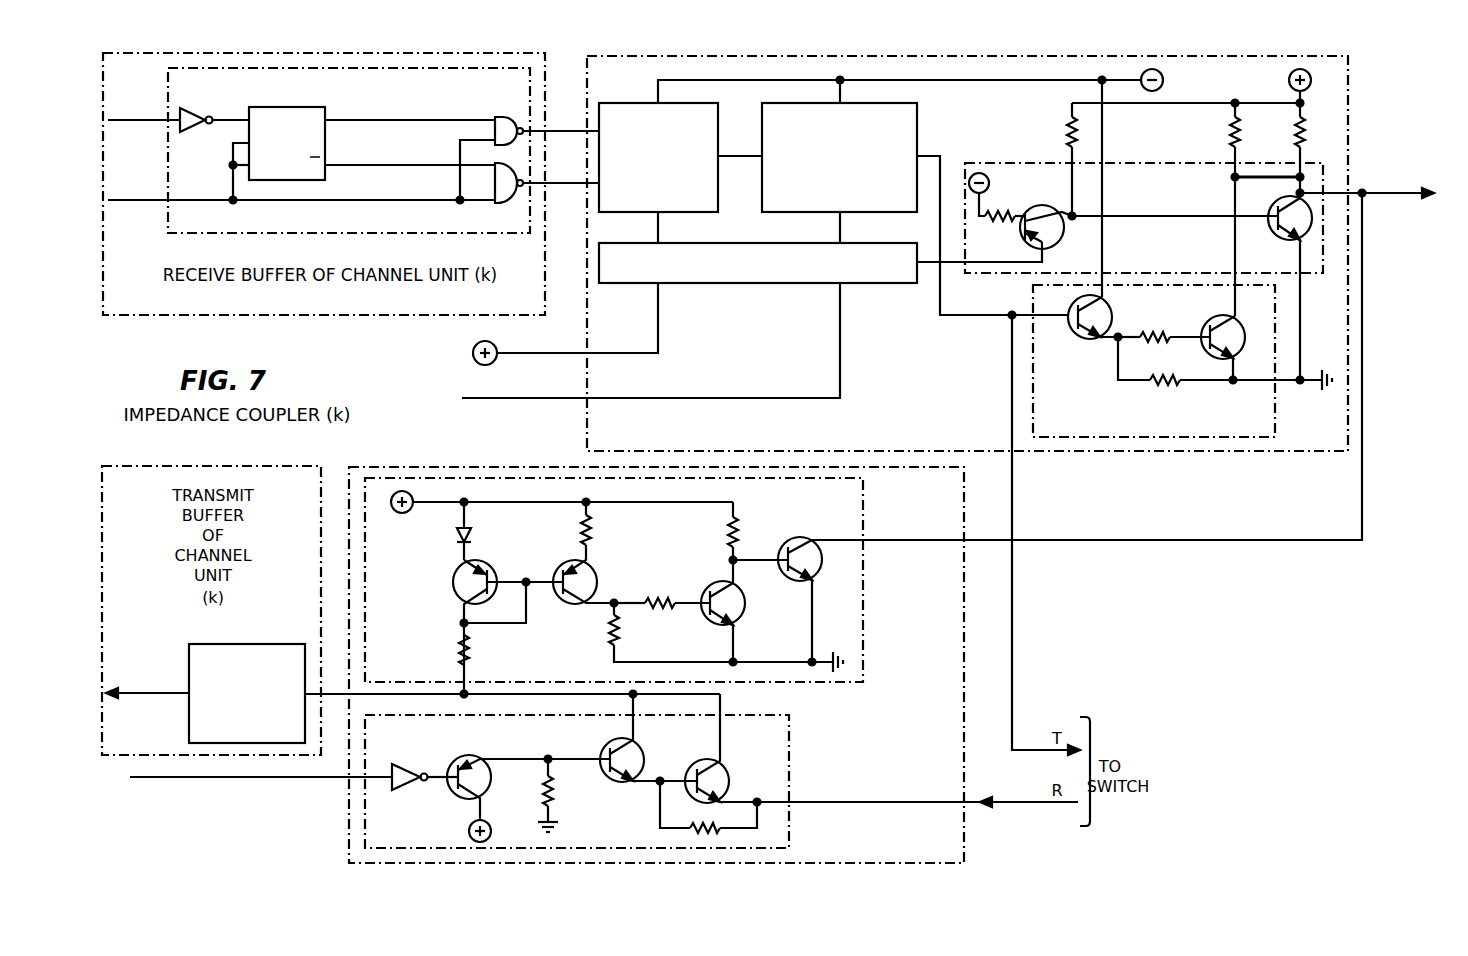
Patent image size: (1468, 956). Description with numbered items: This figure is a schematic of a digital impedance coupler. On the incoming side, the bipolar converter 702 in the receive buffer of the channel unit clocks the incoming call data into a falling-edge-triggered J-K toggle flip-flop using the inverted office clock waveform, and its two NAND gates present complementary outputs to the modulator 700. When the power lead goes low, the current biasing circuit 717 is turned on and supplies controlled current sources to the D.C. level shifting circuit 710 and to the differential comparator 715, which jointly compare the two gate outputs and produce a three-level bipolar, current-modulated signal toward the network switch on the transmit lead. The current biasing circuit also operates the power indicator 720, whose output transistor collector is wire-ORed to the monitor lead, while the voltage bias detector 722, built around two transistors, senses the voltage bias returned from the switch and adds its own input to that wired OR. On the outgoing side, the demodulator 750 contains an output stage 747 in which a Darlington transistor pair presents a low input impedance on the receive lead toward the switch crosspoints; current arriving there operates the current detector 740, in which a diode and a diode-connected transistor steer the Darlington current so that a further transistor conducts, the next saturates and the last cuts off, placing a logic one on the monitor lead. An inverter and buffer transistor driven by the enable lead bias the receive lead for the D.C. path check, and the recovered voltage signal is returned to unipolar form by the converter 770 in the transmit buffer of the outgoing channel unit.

The modulator 700 is at (962, 298).
The bipolar converter circuit 702 is at (198, 222).
The D.C. level shifting circuit 710 is at (612, 126).
The differential comparator 715 is at (905, 128).
The current biasing circuit 717 is at (772, 285).
The power indicator 720 is at (1013, 166).
The voltage bias detector 722 is at (1260, 410).
The current detector 740 is at (852, 616).
The demodulator output circuit 747 is at (790, 832).
The demodulator 750 is at (604, 665).
The converter to unipolar 770 is at (196, 653).